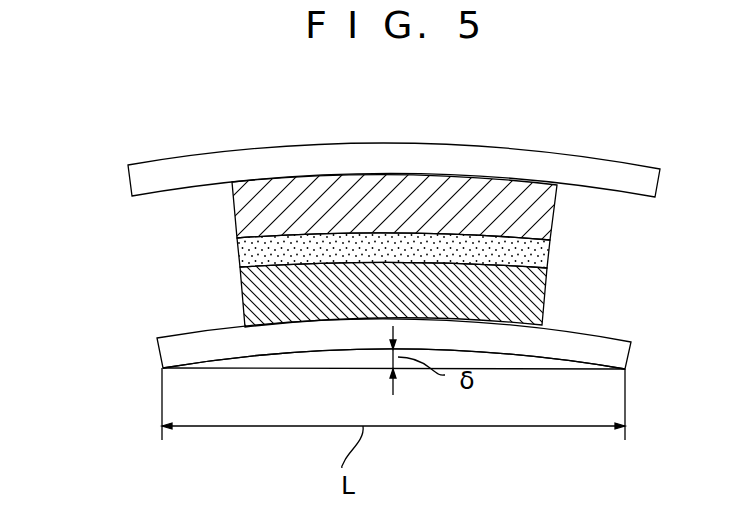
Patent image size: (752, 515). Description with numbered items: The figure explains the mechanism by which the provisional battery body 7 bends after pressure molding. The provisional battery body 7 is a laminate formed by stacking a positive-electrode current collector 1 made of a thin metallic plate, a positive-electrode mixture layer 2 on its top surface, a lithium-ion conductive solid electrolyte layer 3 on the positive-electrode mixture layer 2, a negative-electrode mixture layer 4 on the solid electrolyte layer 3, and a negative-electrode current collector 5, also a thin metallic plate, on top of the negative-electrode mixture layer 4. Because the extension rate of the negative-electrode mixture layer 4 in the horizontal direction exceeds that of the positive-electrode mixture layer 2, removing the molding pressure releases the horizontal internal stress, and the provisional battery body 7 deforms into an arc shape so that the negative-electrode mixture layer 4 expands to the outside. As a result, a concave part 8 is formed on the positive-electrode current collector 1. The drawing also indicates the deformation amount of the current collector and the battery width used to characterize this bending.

The positive-electrode current collector 1 is at (172, 352).
The positive-electrode mixture layer 2 is at (528, 295).
The lithium-ion conductive solid electrolyte layer 3 is at (238, 248).
The negative-electrode mixture layer 4 is at (543, 220).
The negative-electrode current collector 5 is at (142, 173).
The provisional battery body 7 is at (640, 134).
The concave part 8 is at (498, 352).